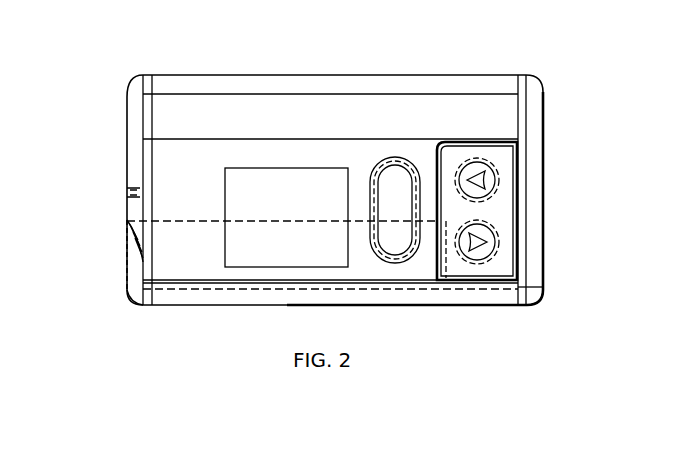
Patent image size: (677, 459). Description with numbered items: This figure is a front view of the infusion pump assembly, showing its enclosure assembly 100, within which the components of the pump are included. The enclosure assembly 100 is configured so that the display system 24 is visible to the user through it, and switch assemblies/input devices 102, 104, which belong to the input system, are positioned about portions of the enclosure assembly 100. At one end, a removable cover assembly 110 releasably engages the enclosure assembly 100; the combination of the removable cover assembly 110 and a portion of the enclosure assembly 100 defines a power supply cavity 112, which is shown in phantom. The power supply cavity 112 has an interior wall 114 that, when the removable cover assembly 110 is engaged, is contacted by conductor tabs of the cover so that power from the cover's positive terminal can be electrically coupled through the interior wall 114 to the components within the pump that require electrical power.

The enclosure assembly 100 is at (537, 118).
The removable cover assembly 110 is at (123, 255).
The power supply cavity 112 is at (190, 255).
The interior wall 114 is at (172, 221).
The display system 24 is at (253, 250).
The switch assembly/input device 102 is at (393, 247).
The switch assembly/input device 104 is at (498, 263).